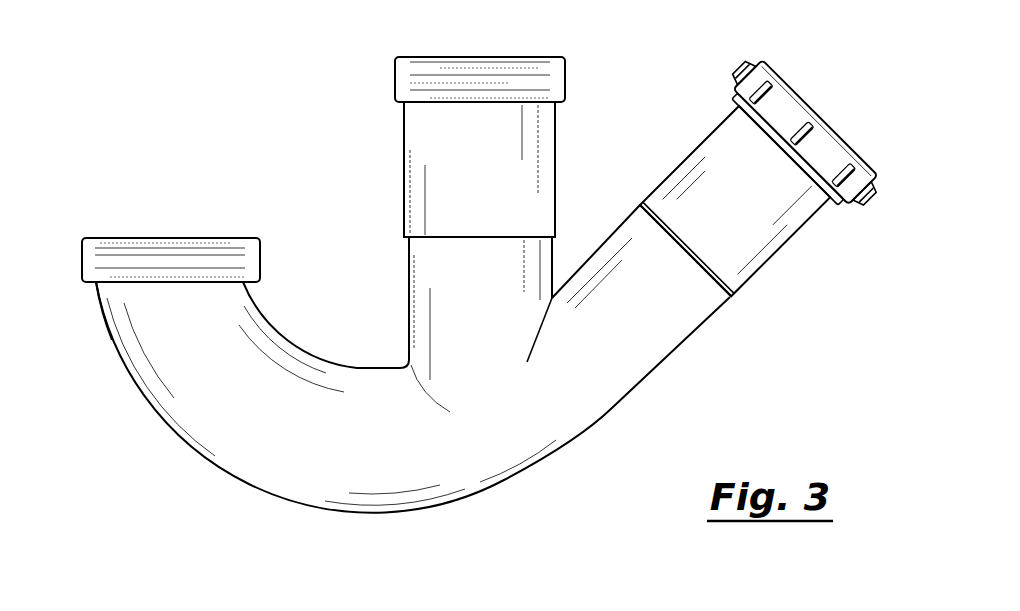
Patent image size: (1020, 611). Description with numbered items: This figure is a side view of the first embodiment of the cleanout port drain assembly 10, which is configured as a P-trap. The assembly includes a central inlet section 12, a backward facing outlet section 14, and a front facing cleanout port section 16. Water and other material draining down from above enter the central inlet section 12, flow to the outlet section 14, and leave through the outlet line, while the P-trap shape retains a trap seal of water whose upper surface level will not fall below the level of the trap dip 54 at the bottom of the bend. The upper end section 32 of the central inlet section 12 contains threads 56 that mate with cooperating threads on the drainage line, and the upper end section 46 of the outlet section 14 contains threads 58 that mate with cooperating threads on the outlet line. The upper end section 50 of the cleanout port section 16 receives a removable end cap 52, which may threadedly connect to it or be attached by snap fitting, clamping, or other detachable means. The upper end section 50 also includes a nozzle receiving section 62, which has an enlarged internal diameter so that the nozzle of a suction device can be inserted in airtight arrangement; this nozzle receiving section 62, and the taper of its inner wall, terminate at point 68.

The cleanout port drain assembly 10 is at (375, 443).
The central inlet section 12 is at (422, 272).
The outlet section 14 is at (175, 420).
The cleanout port section 16 is at (657, 345).
The upper end section 32 is at (412, 120).
The upper end section 46 is at (110, 300).
The upper end section 50 is at (730, 128).
The end cap 52 is at (812, 112).
The trap dip 54 is at (357, 367).
The threads 56 is at (412, 79).
The threads 58 is at (95, 255).
The nozzle receiving section 62 is at (745, 228).
The point 68 is at (702, 273).